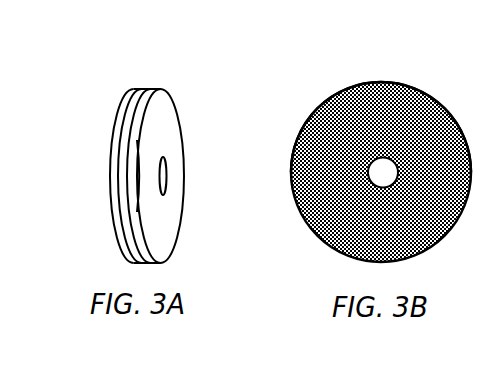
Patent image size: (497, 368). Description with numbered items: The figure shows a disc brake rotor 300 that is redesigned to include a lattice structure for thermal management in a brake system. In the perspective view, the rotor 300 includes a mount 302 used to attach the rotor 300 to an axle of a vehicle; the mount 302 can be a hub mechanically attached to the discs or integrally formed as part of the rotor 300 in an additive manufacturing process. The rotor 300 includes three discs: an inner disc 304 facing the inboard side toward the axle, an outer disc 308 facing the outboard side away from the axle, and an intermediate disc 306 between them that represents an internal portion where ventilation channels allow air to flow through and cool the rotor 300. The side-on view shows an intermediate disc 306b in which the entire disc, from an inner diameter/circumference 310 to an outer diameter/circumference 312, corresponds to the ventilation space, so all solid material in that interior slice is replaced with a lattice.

In FIG. 3A, the disc brake rotor 300 is at (101, 79).
In FIG. 3A, the mount 302 is at (165, 165).
In FIG. 3A, the inner disc 304 is at (155, 88).
In FIG. 3A, the intermediate disc 306 is at (143, 88).
In FIG. 3A, the outer disc 308 is at (133, 88).
In FIG. 3B, the intermediate disc 306b is at (331, 80).
In FIG. 3B, the inner diameter/circumference 310 is at (398, 160).
In FIG. 3B, the outer diameter/circumference 312 is at (380, 82).